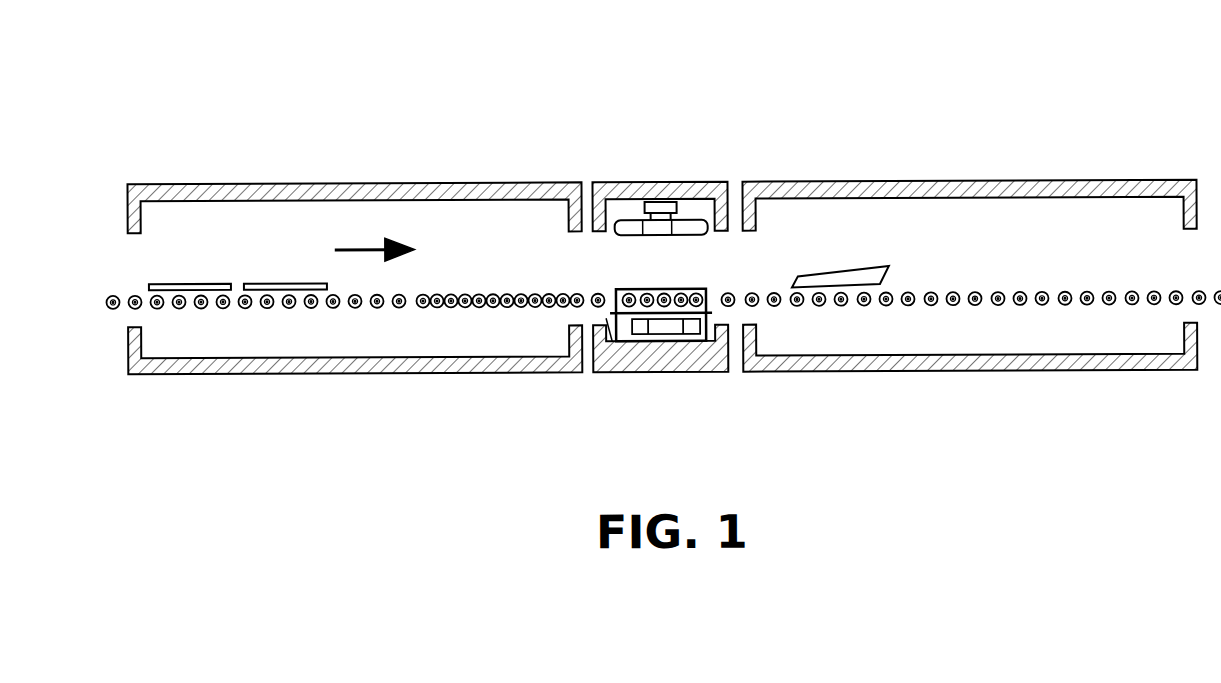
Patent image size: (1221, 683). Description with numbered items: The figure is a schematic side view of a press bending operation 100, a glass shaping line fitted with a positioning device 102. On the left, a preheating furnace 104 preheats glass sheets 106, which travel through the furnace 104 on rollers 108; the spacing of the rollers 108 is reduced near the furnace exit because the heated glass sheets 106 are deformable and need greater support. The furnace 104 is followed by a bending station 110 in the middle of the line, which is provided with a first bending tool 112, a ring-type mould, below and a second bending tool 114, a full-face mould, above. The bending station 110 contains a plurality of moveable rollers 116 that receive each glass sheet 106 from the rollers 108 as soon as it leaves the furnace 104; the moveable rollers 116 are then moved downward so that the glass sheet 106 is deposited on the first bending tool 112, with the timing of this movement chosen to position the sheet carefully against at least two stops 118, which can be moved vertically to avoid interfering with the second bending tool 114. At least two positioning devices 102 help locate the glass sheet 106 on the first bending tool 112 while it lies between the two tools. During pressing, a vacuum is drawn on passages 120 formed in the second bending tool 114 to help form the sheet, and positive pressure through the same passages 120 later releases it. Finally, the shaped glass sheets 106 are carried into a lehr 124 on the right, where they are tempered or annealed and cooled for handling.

The press bending operation 100 is at (717, 126).
The positioning device 102 is at (662, 336).
The preheating furnace 104 is at (340, 183).
The glass sheets 106 is at (276, 281).
The rollers 108 is at (377, 308).
The bending station 110 is at (715, 322).
The first bending tool 112 is at (606, 320).
The second bending tool 114 is at (628, 212).
The moveable rollers 116 is at (664, 291).
The stops 118 is at (718, 313).
The passages 120 is at (710, 229).
The lehr 124 is at (990, 183).